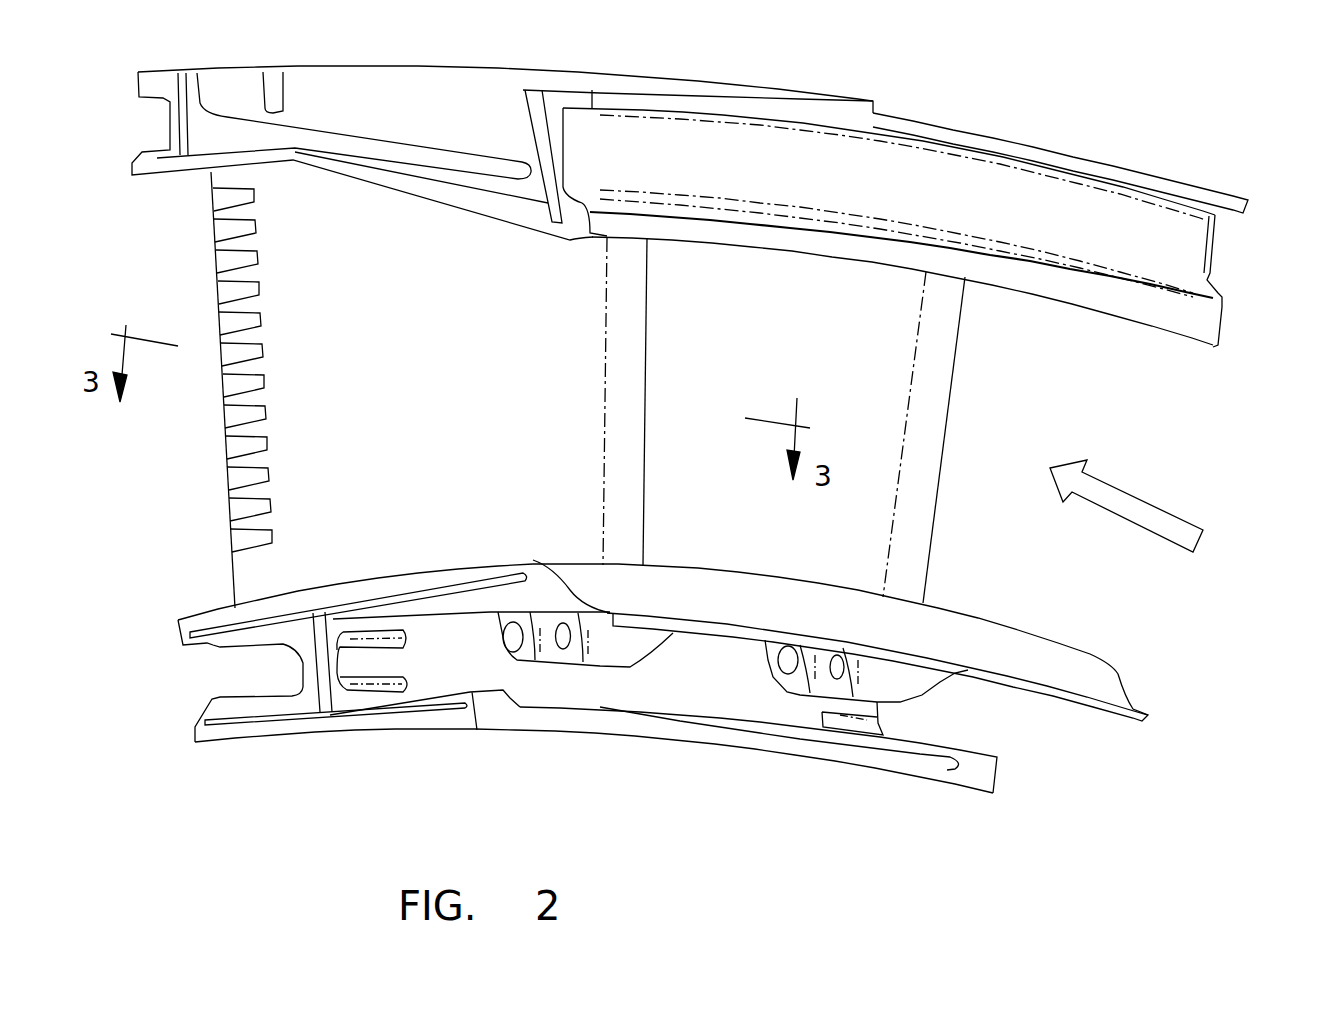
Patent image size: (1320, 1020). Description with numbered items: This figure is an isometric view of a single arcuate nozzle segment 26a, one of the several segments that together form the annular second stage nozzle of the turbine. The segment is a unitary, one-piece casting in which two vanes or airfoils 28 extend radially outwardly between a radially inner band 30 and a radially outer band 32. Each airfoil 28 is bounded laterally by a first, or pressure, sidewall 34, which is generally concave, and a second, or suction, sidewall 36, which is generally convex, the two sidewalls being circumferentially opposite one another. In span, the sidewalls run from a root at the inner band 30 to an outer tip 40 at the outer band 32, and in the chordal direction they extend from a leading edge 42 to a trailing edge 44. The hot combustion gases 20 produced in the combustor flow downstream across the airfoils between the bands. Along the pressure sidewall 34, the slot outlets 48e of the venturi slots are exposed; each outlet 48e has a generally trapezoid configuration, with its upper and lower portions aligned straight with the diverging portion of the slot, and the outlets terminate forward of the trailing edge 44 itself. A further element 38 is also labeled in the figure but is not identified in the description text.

The hot combustion gases 20 is at (1163, 502).
The arcuate nozzle segment 26a is at (1130, 172).
The vanes or airfoils 28 is at (648, 390).
The radially inner band 30 is at (1110, 677).
The radially outer band 32 is at (1213, 277).
The first sidewall 34 is at (429, 383).
The second sidewall 36 is at (648, 308).
The inner band hanger 38 is at (245, 605).
The outer tip 40 is at (212, 182).
The leading edge 42 is at (605, 480).
The trailing edge 44 is at (223, 452).
The slot outlet 48e is at (236, 260).